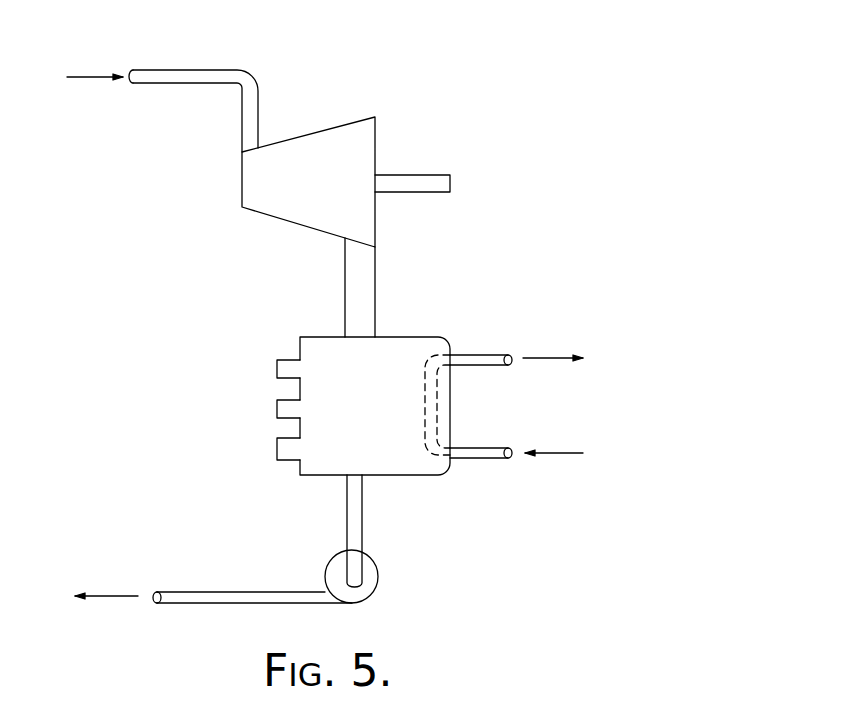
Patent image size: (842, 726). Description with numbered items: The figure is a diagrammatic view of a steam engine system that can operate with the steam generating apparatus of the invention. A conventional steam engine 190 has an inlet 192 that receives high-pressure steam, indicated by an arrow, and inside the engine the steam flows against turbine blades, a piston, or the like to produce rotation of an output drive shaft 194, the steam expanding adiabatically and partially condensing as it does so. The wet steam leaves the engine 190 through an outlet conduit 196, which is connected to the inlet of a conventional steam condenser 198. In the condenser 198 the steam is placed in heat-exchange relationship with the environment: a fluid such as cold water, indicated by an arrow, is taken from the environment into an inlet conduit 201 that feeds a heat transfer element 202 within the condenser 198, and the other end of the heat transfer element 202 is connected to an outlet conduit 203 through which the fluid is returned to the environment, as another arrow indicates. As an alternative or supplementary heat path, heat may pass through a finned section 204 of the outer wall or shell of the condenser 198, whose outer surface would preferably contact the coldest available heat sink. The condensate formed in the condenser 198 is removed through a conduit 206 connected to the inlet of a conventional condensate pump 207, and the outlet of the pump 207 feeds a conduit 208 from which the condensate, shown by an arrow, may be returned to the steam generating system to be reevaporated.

The steam engine 190 is at (382, 133).
The inlet 192 is at (248, 70).
The output drive shaft 194 is at (430, 175).
The outlet conduit 196 is at (360, 283).
The steam condenser 198 is at (452, 337).
The inlet conduit 201 is at (490, 458).
The heat transfer element 202 is at (440, 408).
The outlet conduit 203 is at (500, 353).
The finned section 204 is at (285, 419).
The conduit 206 is at (365, 520).
The condensate pump 207 is at (368, 577).
The conduit 208 is at (180, 592).